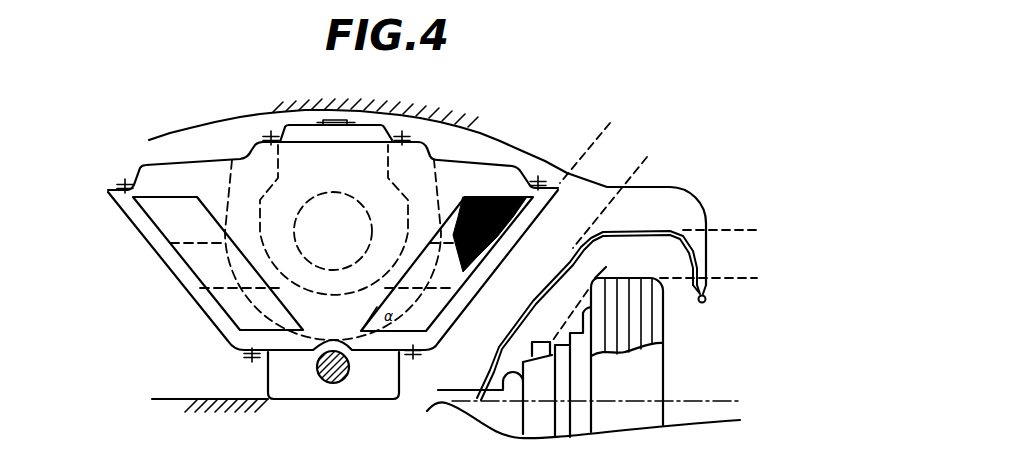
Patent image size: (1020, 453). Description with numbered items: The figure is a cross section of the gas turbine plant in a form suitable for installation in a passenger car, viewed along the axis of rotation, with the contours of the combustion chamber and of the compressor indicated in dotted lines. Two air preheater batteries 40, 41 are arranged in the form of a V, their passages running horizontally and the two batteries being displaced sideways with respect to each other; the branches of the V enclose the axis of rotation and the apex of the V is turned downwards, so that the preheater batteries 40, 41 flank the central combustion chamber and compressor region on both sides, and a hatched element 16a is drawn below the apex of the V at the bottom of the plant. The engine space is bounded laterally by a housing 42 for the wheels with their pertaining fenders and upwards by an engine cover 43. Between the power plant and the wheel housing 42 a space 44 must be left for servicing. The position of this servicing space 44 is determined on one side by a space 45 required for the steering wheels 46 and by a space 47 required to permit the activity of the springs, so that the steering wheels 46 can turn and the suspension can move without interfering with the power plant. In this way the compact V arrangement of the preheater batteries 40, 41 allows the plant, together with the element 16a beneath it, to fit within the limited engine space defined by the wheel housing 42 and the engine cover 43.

The air preheater battery 40 is at (208, 263).
The air preheater battery 41 is at (445, 288).
The housing 42 is at (645, 232).
The engine cover 43 is at (517, 150).
The space 44 is at (582, 103).
The space 45 is at (606, 301).
The steering wheels 46 is at (648, 375).
The space 47 is at (748, 197).
The pivot pin 16a is at (343, 378).